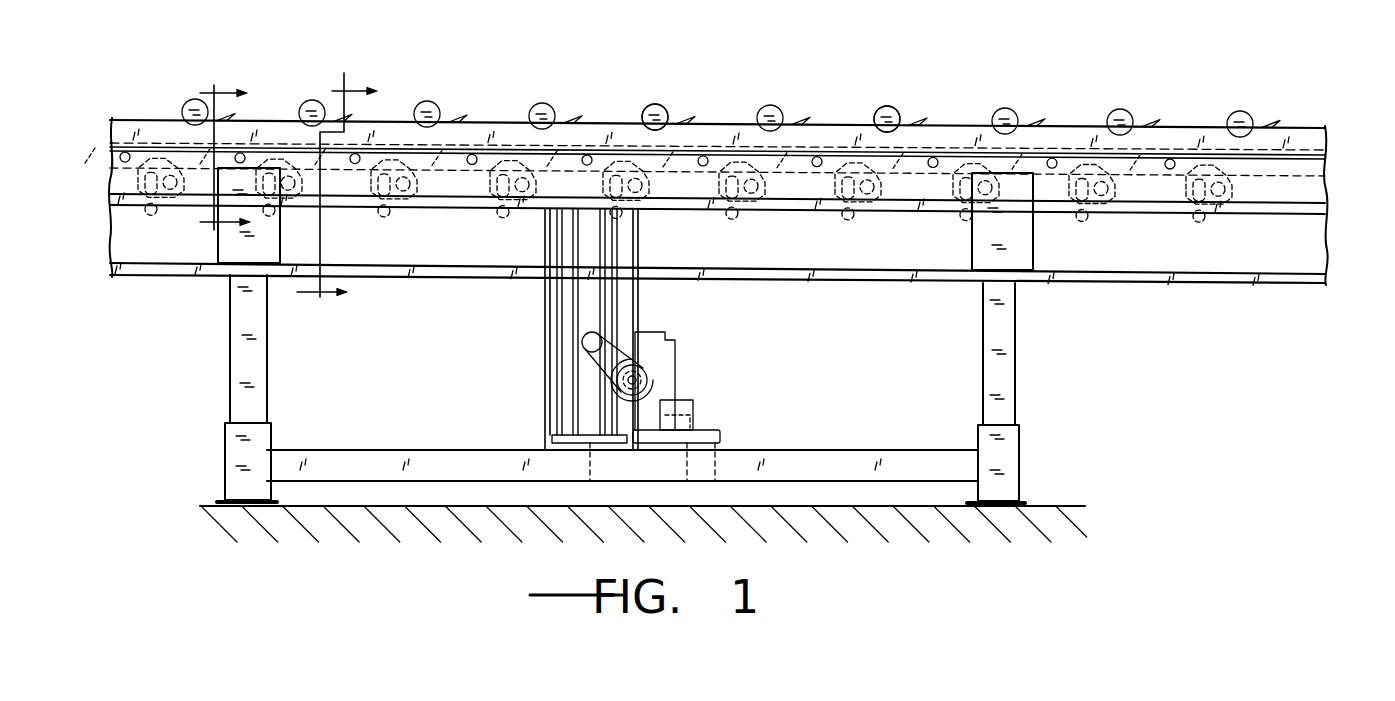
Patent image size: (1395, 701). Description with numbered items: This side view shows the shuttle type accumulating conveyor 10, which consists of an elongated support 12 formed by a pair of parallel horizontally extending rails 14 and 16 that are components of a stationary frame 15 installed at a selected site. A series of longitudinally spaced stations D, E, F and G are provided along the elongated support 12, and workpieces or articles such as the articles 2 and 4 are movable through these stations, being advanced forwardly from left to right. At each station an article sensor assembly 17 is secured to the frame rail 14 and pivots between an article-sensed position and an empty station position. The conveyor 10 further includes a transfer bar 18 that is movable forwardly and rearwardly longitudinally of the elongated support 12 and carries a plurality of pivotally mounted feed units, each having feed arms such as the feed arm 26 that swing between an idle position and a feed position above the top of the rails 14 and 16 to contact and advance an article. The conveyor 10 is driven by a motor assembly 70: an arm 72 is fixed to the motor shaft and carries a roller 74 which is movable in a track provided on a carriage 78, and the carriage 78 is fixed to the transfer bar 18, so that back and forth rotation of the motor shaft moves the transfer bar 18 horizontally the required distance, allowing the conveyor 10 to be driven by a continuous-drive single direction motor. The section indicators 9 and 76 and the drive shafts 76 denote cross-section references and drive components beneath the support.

The accumulating conveyor 10 is at (217, 385).
The elongated support 12 is at (105, 135).
The rail 14 is at (148, 126).
The stationary frame 15 is at (1015, 311).
The rail 16 is at (1303, 173).
The article sensor assembly 17 is at (802, 124).
The transfer bar 18 is at (112, 183).
The feed arm 26 is at (898, 217).
The article 2 is at (347, 190).
The section line 9- 9 is at (229, 156).
The article 4 is at (649, 113).
The station D is at (551, 120).
The station E is at (660, 120).
The station F is at (770, 124).
The station G is at (890, 125).
The motor assembly 70 is at (665, 375).
The arm 72 is at (647, 365).
The roller 74 is at (582, 343).
The drive shafts 76 is at (582, 281).
The carriage 78 is at (547, 377).